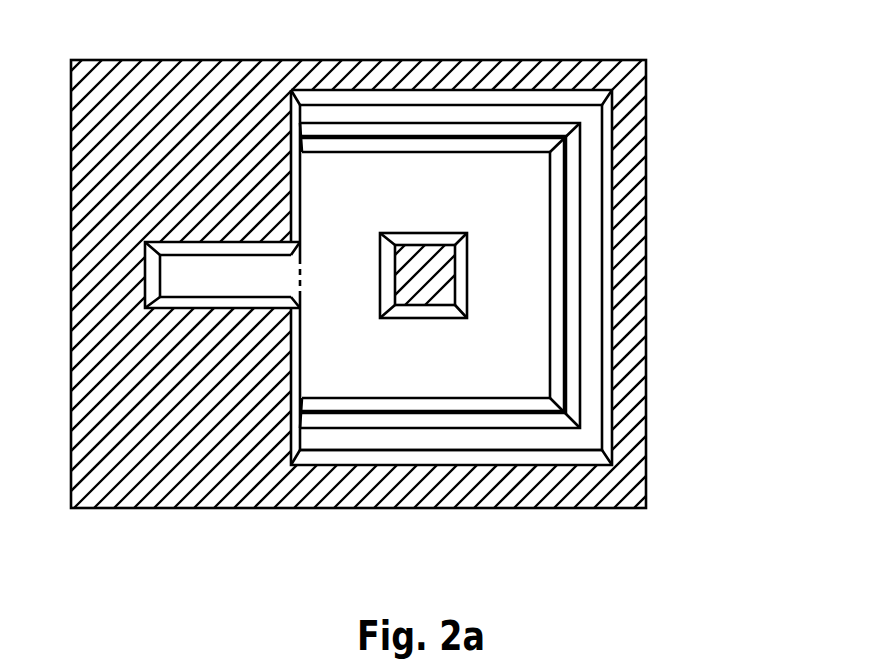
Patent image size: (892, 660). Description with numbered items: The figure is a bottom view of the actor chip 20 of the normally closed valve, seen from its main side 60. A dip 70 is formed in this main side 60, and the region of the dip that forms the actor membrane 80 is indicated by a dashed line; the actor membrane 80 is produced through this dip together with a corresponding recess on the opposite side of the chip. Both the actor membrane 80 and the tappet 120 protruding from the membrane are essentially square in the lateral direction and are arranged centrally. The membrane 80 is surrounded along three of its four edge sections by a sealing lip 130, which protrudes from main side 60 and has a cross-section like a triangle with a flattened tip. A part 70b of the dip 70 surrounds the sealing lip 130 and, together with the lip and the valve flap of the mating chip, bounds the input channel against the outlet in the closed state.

The actor chip 20 is at (646, 186).
The main side 60 is at (628, 361).
The dip 70 is at (300, 333).
The part of dip 70b is at (512, 448).
The actor membrane 80 is at (300, 283).
The tappet 120 is at (412, 277).
The sealing lip 130 is at (546, 400).